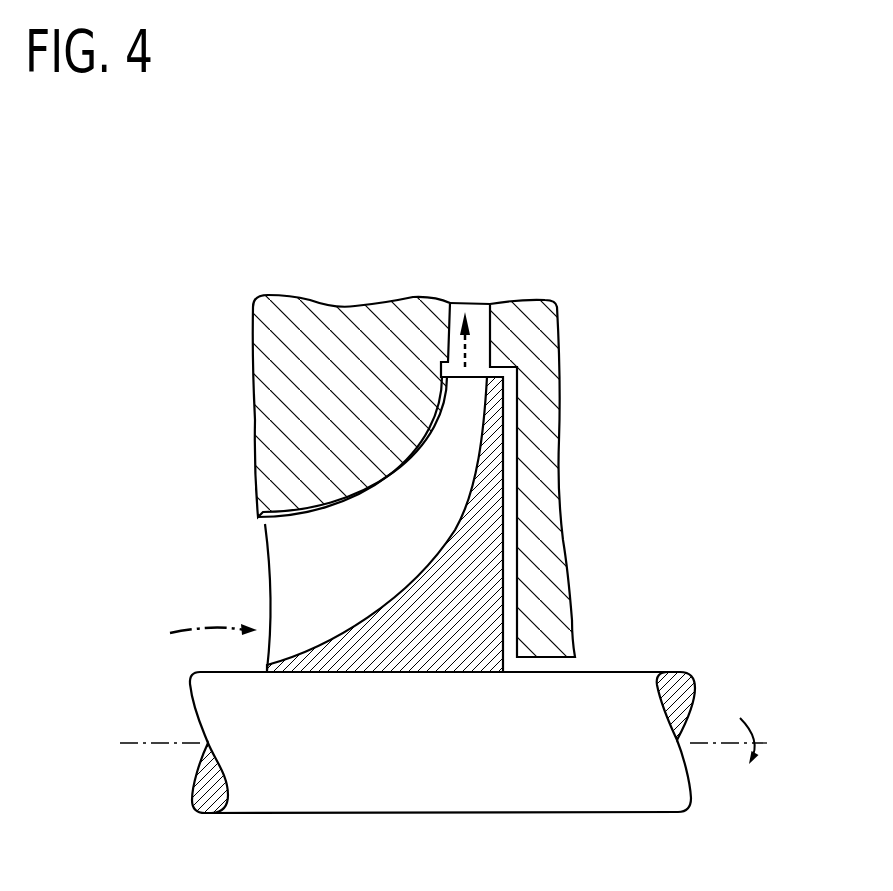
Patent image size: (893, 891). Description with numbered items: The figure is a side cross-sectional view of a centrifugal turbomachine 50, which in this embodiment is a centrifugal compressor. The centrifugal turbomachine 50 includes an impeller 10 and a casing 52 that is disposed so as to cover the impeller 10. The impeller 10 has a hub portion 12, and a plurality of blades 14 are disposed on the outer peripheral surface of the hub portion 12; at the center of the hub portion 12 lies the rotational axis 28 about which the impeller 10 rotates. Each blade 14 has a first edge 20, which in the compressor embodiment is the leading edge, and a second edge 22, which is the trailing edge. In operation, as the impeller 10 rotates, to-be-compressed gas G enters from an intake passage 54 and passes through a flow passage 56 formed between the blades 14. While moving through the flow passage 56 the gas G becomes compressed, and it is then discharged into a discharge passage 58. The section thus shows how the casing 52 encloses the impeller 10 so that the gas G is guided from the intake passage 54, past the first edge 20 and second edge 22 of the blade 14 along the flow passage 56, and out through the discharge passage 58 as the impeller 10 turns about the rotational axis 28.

The impeller 10 is at (507, 611).
The hub portion 12 is at (497, 562).
The blade 14 is at (256, 542).
The first edge 20 is at (267, 608).
The second edge 22 is at (457, 373).
The rotational axis 28 is at (620, 793).
The centrifugal turbomachine 50 is at (660, 306).
The casing 52 is at (318, 337).
The intake passage 54 is at (242, 570).
The flow passage 56 is at (450, 488).
The discharge passage 58 is at (477, 325).
The to-be-compressed gas G is at (199, 632).